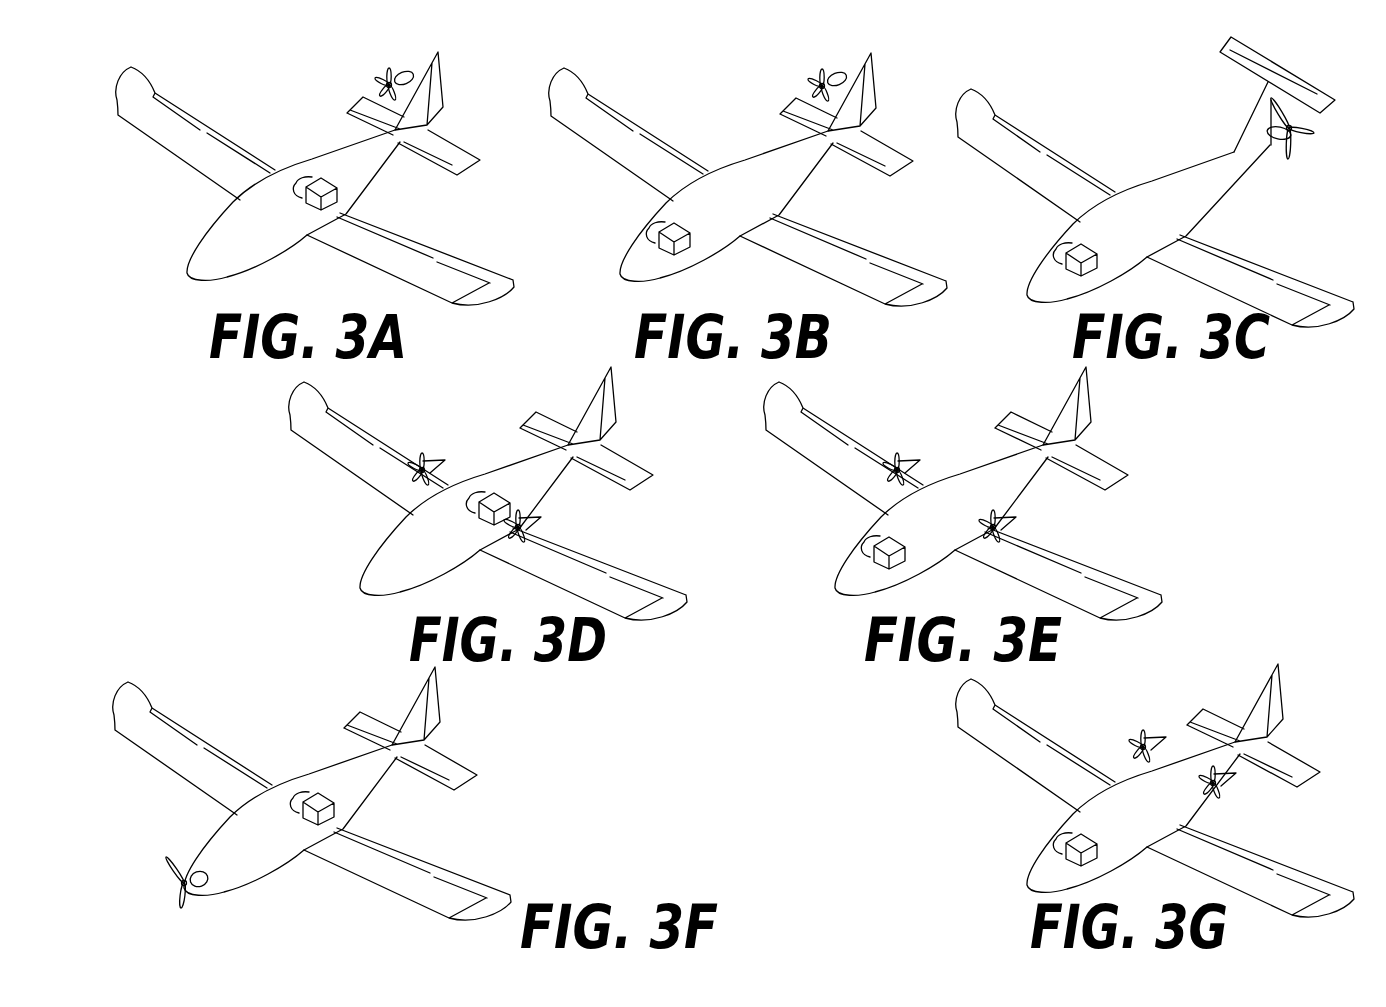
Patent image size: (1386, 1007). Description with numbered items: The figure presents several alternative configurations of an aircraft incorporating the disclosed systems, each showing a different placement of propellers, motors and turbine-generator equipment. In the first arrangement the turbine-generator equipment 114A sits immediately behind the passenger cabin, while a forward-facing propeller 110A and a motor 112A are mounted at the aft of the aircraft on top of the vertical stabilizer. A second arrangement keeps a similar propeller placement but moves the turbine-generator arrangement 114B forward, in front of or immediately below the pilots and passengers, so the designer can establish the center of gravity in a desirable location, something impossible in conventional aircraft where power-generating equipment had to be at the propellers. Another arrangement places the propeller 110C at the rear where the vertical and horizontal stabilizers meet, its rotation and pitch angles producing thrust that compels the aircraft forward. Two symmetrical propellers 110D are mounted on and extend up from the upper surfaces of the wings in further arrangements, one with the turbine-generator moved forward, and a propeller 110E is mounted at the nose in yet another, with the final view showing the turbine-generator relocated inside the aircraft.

In FIG. 3A, the forward-facing propeller 110A is at (386, 79).
In FIG. 3A, the motor 112A is at (402, 72).
In FIG. 3A, the turbine-generator equipment 114A is at (328, 180).
In FIG. 3B, the turbine-generator arrangement 114B is at (683, 250).
In FIG. 3C, the propeller 110C is at (1294, 146).
In FIG. 3D, the symmetrical propellers 110D is at (443, 463).
In FIG. 3F, the propeller 110E is at (189, 902).